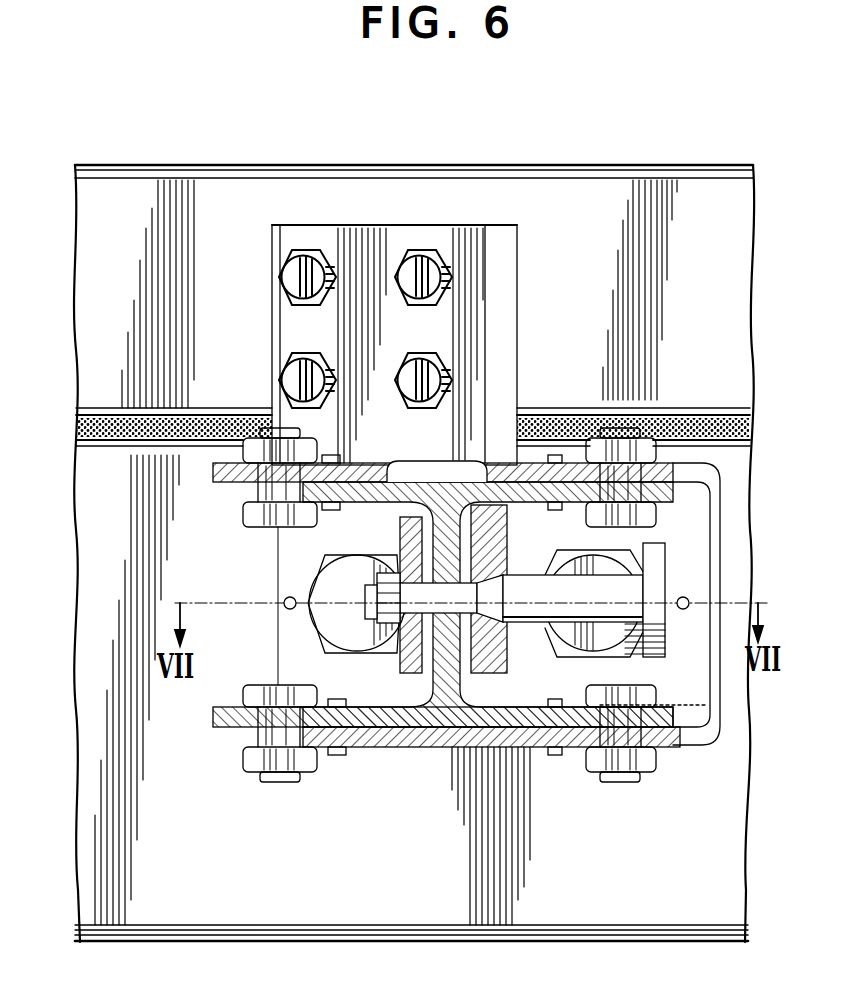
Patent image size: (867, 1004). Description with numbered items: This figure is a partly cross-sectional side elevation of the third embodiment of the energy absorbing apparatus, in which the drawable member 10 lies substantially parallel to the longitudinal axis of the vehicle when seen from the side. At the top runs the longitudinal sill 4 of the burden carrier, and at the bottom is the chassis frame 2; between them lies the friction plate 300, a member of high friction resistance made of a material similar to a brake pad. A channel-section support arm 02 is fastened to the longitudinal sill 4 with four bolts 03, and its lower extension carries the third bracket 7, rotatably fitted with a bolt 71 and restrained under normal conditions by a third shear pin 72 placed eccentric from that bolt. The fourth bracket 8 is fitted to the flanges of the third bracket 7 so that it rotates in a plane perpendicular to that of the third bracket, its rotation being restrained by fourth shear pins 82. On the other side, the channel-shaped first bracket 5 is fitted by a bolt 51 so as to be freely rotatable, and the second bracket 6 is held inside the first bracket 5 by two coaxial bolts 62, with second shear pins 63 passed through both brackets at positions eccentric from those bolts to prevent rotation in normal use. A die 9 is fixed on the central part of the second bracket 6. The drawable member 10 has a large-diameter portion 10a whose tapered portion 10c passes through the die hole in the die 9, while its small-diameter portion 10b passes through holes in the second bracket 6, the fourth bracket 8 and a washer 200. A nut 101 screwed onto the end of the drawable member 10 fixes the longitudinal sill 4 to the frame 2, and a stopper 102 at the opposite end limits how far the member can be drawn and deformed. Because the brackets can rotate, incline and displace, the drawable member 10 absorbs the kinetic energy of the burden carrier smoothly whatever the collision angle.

The longitudinal sill 4 is at (566, 178).
The chassis frame 2 is at (487, 942).
The friction plate 300 is at (690, 434).
The support arm 02 is at (274, 362).
The bolts 03 is at (298, 305).
The first bracket 5 is at (705, 744).
The second bracket 6 is at (532, 502).
The third bracket 7 is at (232, 748).
The fourth bracket 8 is at (232, 710).
The die 9 is at (500, 680).
The washer 200 is at (410, 682).
The drawable member 10 is at (472, 599).
The large-diameter portion 10a is at (650, 632).
The small-diameter portion 10b is at (437, 612).
The tapered portion 10c is at (483, 570).
The nut 101 is at (388, 573).
The stopper 102 is at (655, 575).
The bolt 51 is at (563, 643).
The bolt 71 is at (323, 583).
The third shear pin 72 is at (288, 596).
The bolts 62 is at (622, 507).
The second shear pins 63 is at (558, 746).
The fourth shear pins 82 is at (334, 748).